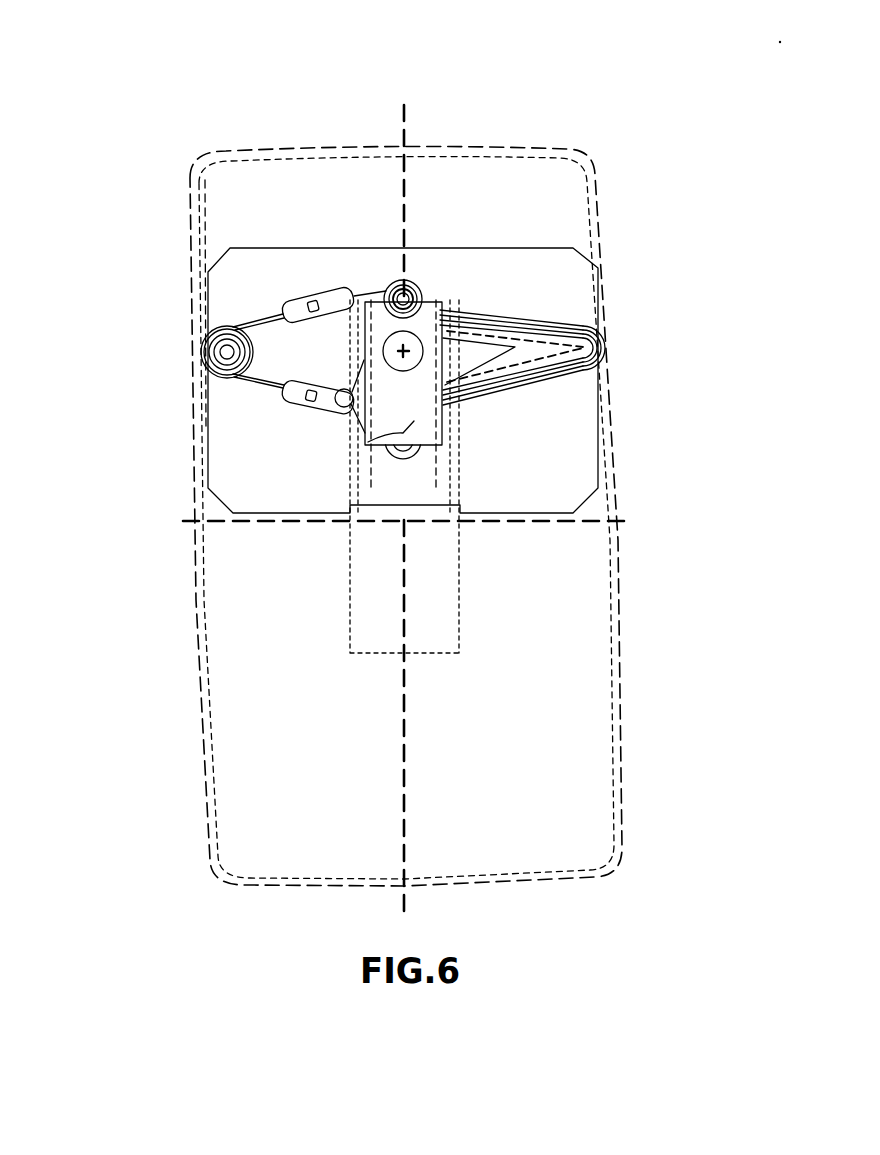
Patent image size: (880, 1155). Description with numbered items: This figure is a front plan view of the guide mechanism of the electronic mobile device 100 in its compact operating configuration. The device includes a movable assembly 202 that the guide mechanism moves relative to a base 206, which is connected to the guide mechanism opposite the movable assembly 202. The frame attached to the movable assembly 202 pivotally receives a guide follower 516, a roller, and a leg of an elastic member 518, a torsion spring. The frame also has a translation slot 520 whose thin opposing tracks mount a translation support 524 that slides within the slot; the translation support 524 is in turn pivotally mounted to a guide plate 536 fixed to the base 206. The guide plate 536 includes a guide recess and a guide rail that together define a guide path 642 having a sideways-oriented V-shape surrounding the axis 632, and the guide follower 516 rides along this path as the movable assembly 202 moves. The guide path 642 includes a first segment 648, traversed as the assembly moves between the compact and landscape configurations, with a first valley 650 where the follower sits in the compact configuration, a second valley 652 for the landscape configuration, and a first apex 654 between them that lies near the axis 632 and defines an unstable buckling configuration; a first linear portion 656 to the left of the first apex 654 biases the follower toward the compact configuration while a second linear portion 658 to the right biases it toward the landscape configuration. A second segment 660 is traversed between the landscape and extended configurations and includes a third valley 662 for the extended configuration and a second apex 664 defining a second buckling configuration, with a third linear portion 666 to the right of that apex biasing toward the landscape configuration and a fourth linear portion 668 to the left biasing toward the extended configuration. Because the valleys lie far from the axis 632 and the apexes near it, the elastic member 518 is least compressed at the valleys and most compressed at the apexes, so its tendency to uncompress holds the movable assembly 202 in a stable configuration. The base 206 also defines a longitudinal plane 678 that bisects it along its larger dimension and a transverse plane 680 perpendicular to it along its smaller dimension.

The electronic mobile device 100 is at (118, 95).
The movable assembly 202 is at (605, 242).
The base 206 is at (625, 804).
The guide follower 516 is at (415, 303).
The elastic member 518 is at (230, 328).
The translation slot 520 is at (458, 548).
The translation support 524 is at (365, 351).
The guide plate 536 is at (560, 513).
The axis 632 is at (367, 431).
The guide path 642 is at (478, 326).
The first segment 648 is at (496, 332).
The first valley 650 is at (396, 304).
The second valley 652 is at (605, 330).
The first apex 654 is at (446, 321).
The first linear portion 656 is at (425, 312).
The second linear portion 658 is at (548, 340).
The second segment 660 is at (501, 374).
The third valley 662 is at (398, 356).
The second apex 664 is at (442, 394).
The third linear portion 666 is at (560, 359).
The fourth linear portion 668 is at (425, 402).
The longitudinal plane 678 is at (408, 748).
The transverse plane 680 is at (283, 525).